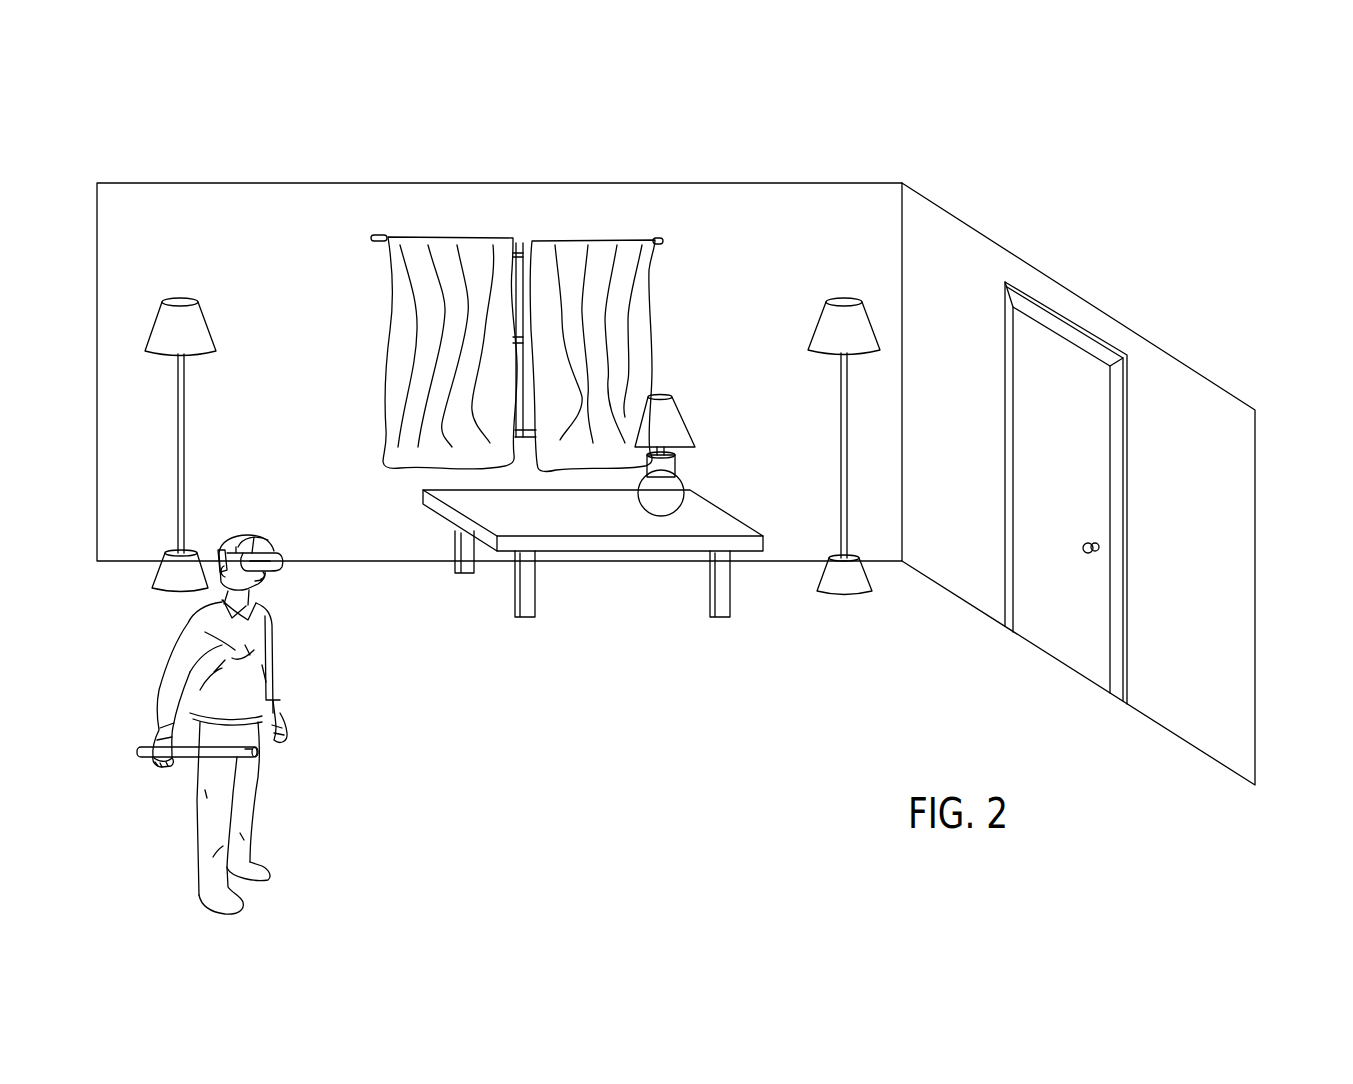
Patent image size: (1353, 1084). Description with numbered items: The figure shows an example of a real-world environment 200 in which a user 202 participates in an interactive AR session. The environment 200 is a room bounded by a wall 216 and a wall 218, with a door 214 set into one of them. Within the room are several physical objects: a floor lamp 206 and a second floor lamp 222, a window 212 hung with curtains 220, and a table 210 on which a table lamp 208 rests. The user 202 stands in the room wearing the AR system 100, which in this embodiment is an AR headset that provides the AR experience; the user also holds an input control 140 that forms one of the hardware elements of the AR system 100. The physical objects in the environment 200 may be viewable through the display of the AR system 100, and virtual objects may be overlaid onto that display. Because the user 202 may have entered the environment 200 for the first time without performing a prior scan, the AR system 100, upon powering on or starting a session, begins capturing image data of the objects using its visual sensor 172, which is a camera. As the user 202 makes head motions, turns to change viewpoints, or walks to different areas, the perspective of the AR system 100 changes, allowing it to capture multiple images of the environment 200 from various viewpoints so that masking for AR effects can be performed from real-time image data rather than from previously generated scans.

The real-world environment 200 is at (240, 124).
The wall 216 is at (773, 200).
The wall 218 is at (1237, 437).
The door 214 is at (1093, 470).
The floor lamp 206 is at (199, 328).
The floor lamp 222 is at (823, 327).
The window 212 is at (573, 250).
The curtains 220 is at (637, 345).
The table 210 is at (723, 525).
The table lamp 208 is at (665, 418).
The user 202 is at (166, 643).
The AR system 100 is at (237, 535).
The visual sensor 172 is at (258, 562).
The input control 140 is at (242, 761).